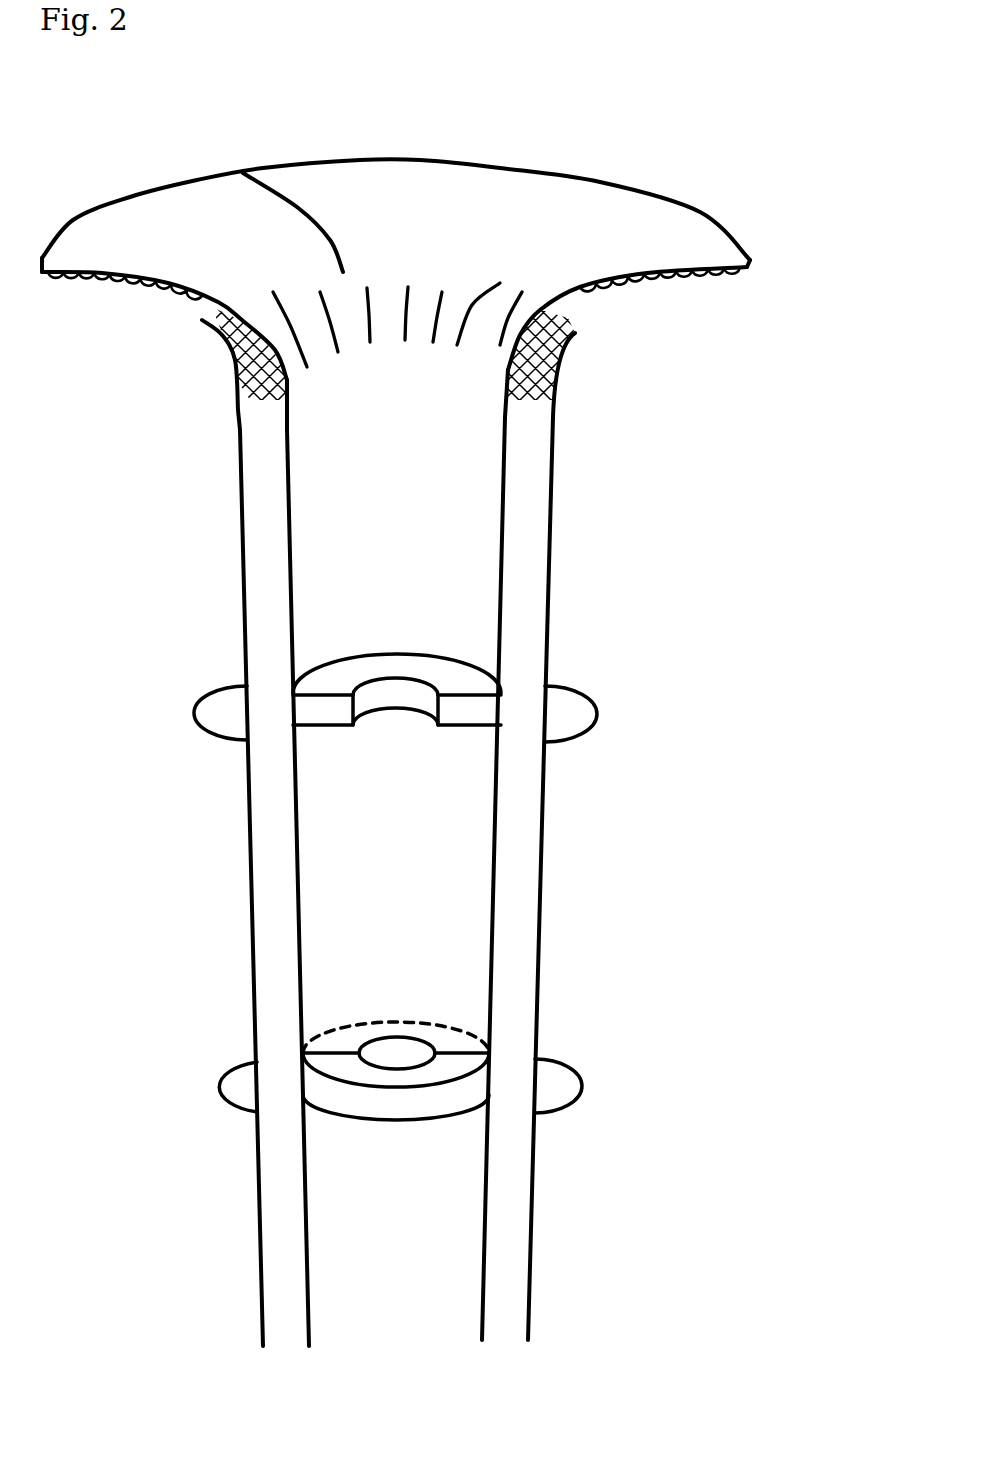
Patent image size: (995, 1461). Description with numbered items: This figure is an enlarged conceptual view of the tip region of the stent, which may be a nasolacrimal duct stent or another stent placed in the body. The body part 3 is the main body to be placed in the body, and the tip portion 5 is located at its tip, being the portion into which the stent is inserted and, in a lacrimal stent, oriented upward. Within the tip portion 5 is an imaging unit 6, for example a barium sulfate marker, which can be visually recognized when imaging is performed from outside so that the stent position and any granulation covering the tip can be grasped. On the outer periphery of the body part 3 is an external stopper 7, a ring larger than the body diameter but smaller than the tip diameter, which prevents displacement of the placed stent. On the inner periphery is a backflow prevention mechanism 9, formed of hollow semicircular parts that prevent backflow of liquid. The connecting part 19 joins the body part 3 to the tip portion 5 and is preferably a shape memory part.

The body part 3 is at (518, 610).
The tip portion 5 is at (615, 233).
The imaging unit 6 is at (317, 212).
The external stopper 7 is at (562, 1077).
The backflow prevention mechanism 9 is at (483, 710).
The connecting part 19 is at (240, 360).